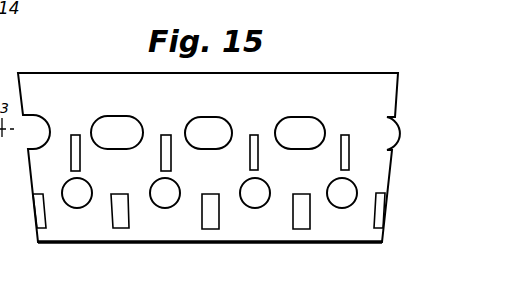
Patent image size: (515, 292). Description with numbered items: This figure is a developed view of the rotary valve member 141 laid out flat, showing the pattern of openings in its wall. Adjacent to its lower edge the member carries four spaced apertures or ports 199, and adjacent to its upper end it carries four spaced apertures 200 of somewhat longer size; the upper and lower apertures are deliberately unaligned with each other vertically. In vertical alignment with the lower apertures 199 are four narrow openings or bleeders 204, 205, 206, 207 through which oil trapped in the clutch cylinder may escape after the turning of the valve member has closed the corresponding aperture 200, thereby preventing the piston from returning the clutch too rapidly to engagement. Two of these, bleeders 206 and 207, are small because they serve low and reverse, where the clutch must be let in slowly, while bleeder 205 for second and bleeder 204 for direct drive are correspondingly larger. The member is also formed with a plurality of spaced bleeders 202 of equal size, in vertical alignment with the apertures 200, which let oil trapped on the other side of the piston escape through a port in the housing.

The valve member 141 is at (260, 105).
The apertures or ports 199 is at (63, 195).
The apertures 200 is at (112, 122).
The bleeders 202 is at (38, 218).
The bleeder 204 is at (76, 133).
The bleeder 205 is at (165, 135).
The bleeder 206 is at (265, 127).
The bleeder 207 is at (358, 126).